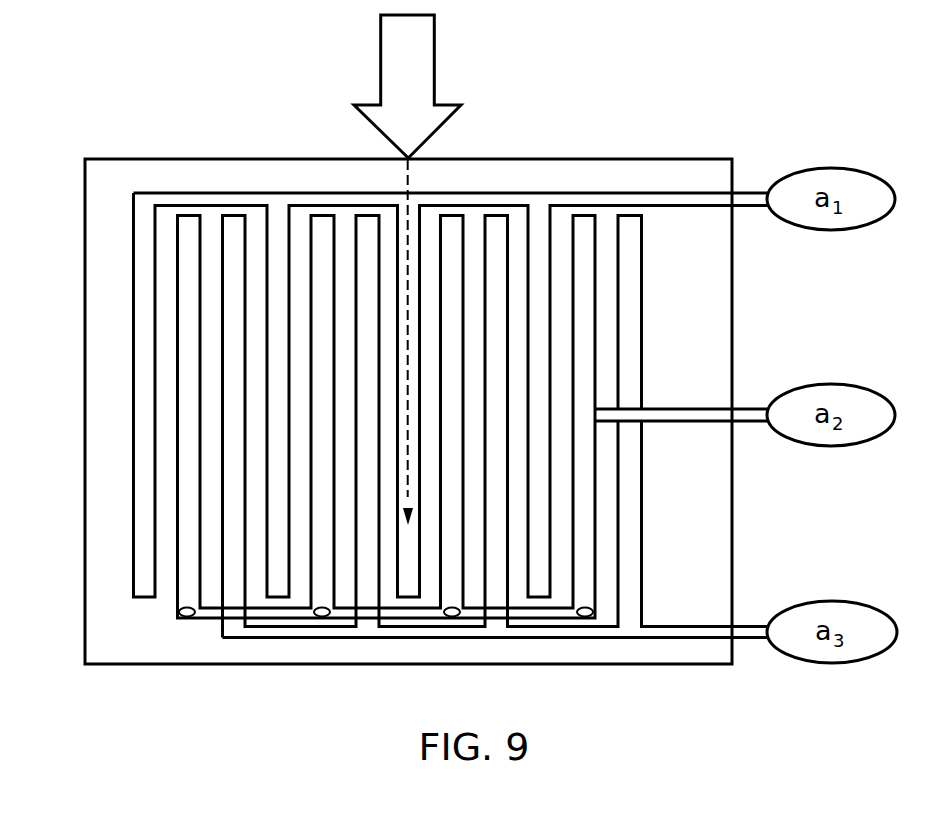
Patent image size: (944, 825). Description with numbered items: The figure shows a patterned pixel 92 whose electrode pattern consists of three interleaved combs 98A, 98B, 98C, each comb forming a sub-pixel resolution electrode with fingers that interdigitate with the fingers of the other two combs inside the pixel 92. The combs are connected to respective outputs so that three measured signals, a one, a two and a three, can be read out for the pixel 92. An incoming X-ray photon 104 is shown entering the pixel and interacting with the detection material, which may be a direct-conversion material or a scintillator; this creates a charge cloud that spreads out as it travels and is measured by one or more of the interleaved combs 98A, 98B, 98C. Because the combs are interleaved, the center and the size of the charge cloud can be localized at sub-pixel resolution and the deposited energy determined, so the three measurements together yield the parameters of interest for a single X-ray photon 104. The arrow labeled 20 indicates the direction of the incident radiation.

The incident light 20 is at (394, 70).
The pixel 92 is at (123, 177).
The X-ray photon 104 is at (407, 228).
The interleaved comb 98A is at (538, 202).
The interleaved comb 98B is at (628, 535).
The interleaved comb 98C is at (183, 618).